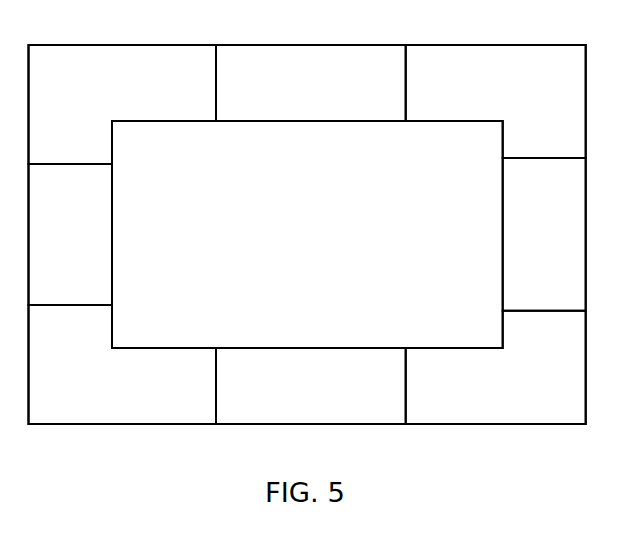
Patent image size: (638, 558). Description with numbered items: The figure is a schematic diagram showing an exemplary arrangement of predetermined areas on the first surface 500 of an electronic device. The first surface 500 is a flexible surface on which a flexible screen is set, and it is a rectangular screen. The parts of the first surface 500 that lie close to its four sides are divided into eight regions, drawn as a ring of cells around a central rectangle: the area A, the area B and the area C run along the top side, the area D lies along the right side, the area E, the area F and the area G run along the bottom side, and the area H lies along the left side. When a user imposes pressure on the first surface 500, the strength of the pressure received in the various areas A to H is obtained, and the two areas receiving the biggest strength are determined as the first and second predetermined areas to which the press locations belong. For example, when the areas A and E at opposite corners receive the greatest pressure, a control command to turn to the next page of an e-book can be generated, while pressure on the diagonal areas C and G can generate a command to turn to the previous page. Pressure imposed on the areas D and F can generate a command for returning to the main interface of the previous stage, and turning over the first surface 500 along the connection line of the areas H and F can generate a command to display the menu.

The first surface 500 is at (116, 25).
The predetermined area A is at (123, 104).
The predetermined area B is at (311, 83).
The predetermined area C is at (496, 101).
The predetermined area D is at (544, 234).
The predetermined area E is at (496, 367).
The predetermined area F is at (311, 386).
The predetermined area G is at (123, 364).
The predetermined area H is at (71, 234).